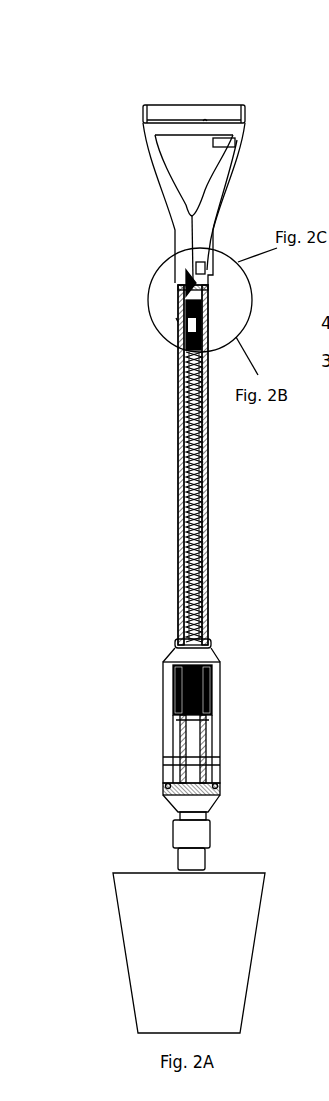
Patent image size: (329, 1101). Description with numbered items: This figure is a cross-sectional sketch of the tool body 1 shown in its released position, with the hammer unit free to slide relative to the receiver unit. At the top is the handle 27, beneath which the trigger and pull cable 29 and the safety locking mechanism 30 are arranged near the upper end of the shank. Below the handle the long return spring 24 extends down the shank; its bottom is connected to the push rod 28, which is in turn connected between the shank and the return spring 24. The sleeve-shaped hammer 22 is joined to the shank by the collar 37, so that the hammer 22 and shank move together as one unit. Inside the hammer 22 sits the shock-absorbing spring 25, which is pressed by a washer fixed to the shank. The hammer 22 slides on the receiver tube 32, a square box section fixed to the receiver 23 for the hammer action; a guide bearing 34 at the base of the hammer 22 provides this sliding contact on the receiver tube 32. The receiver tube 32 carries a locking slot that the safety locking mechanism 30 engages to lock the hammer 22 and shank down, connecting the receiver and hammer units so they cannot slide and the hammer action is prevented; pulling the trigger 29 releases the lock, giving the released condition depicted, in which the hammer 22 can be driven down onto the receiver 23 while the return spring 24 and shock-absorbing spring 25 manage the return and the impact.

The tool body 1 is at (235, 207).
The sleeve-shaped hammer 22 is at (163, 742).
The receiver for hammer action 23 is at (168, 810).
The return spring 24 is at (180, 410).
The shock-absorbing spring 25 is at (178, 692).
The handle 27 is at (143, 143).
The rod 28 is at (180, 290).
The trigger and pull cable 29 is at (236, 143).
The safety locking mechanism 30 is at (197, 288).
The receiver tube 32 is at (180, 525).
The guide bearing 34 is at (163, 785).
The collar 37 is at (213, 655).